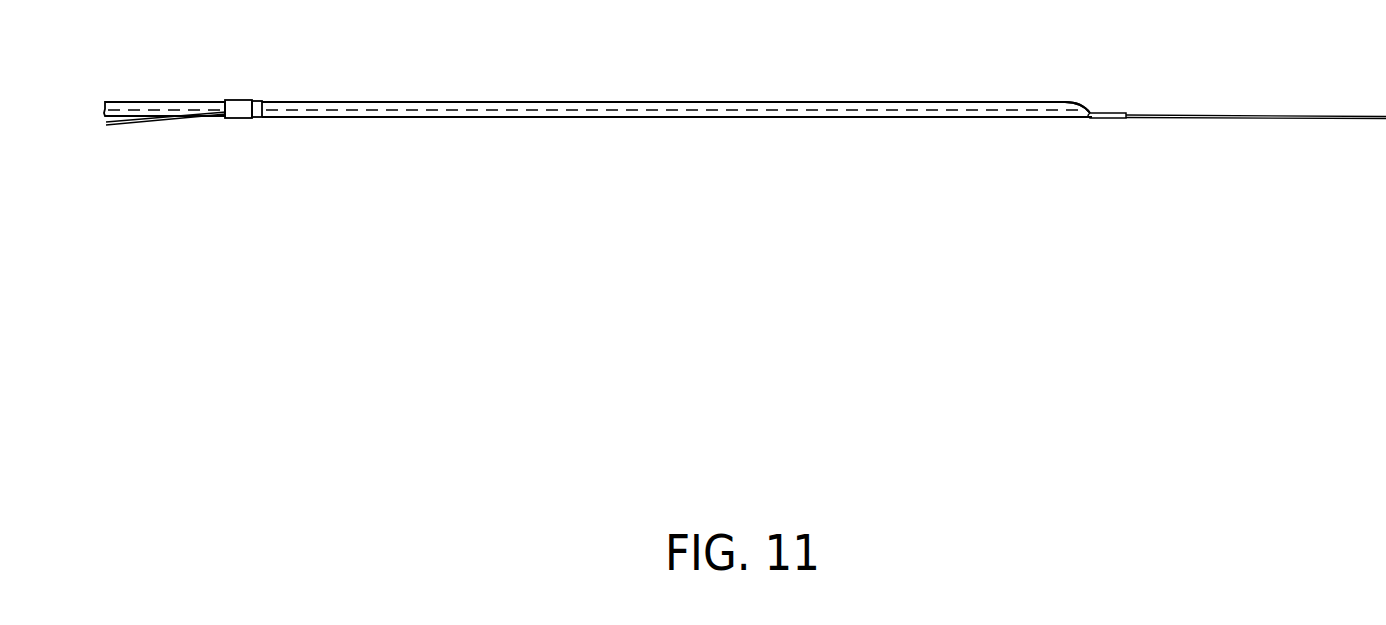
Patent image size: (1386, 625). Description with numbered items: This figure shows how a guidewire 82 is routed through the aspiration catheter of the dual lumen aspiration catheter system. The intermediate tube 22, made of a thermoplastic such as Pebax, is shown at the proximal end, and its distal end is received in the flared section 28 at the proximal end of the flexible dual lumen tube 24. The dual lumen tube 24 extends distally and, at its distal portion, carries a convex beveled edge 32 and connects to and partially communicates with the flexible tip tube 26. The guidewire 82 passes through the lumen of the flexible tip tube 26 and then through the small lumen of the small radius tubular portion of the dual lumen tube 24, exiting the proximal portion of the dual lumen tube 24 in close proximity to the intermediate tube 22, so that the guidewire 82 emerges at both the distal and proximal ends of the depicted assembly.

The intermediate tube 22 is at (188, 100).
The dual lumen tube 24 is at (485, 102).
The flexible tip tube 26 is at (1123, 118).
The flared section 28 is at (237, 110).
The convex beveled edge 32 is at (1080, 106).
The guidewire 82 is at (160, 120).